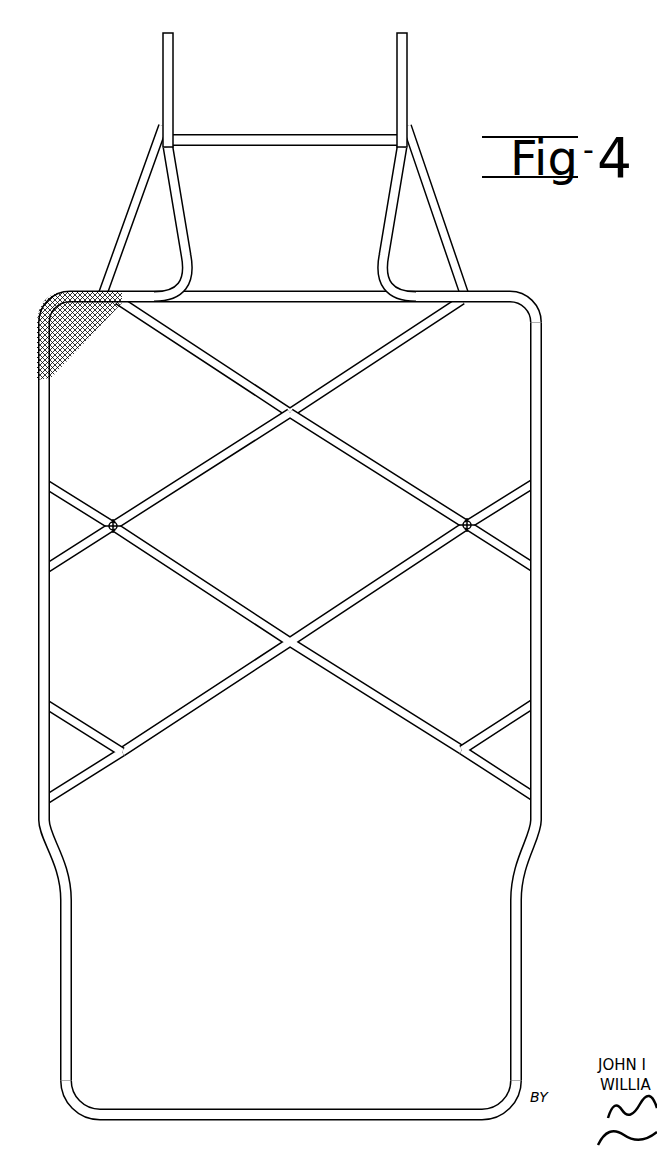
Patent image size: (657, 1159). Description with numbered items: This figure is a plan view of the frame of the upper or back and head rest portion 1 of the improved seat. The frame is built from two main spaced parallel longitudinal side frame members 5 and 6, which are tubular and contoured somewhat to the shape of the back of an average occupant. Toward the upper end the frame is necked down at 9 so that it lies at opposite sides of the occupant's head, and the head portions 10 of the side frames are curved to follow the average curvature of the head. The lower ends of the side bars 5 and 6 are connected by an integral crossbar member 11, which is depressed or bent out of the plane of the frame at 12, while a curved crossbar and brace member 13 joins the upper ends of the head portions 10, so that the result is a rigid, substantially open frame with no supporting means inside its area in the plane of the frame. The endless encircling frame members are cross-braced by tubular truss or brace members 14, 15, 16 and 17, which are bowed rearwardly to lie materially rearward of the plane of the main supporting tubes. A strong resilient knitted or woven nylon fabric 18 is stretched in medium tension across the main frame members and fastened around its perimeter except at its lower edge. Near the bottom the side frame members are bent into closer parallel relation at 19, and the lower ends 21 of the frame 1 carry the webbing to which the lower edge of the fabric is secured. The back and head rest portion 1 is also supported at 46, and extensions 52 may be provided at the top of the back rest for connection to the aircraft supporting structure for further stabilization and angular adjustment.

The upper or back and head rest portion 1 is at (521, 291).
The side frame member 5 is at (38, 543).
The side frame member 6 is at (540, 412).
The necked down portion 9 is at (382, 283).
The head portion 10 is at (187, 205).
The crossbar member 11 is at (405, 1109).
The depressed or bent portion 12 is at (222, 1109).
The curved crossbar and brace member 13 is at (284, 134).
The tubular truss or brace member 14 is at (381, 462).
The tubular truss or brace member 15 is at (80, 506).
The tubular truss or brace member 16 is at (222, 380).
The tubular truss or brace member 17 is at (126, 231).
The fabric 18 is at (72, 292).
The bent portion of side frame members 19 is at (59, 860).
The lower ends of main frame 21 is at (73, 950).
The support point 46 is at (113, 521).
The extension 52 is at (174, 66).